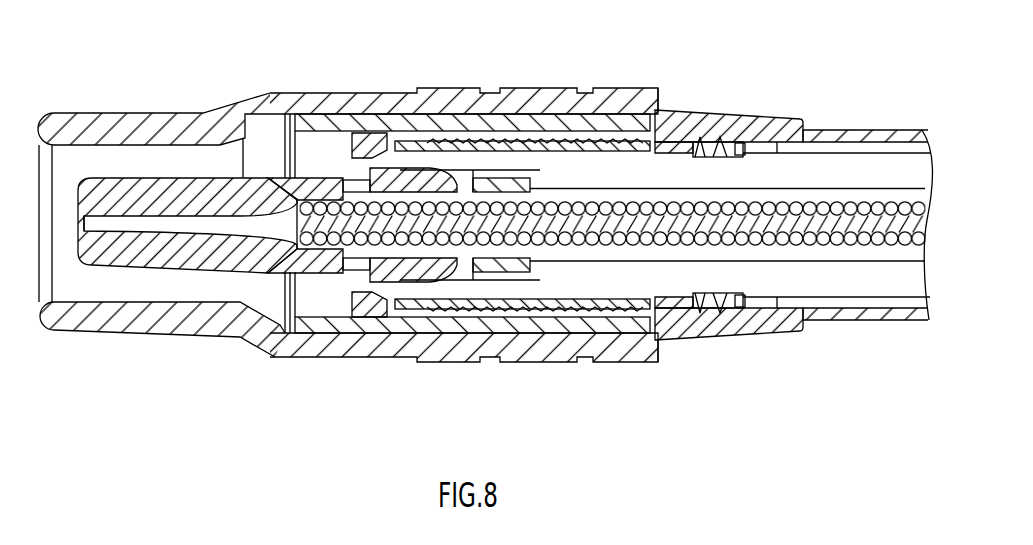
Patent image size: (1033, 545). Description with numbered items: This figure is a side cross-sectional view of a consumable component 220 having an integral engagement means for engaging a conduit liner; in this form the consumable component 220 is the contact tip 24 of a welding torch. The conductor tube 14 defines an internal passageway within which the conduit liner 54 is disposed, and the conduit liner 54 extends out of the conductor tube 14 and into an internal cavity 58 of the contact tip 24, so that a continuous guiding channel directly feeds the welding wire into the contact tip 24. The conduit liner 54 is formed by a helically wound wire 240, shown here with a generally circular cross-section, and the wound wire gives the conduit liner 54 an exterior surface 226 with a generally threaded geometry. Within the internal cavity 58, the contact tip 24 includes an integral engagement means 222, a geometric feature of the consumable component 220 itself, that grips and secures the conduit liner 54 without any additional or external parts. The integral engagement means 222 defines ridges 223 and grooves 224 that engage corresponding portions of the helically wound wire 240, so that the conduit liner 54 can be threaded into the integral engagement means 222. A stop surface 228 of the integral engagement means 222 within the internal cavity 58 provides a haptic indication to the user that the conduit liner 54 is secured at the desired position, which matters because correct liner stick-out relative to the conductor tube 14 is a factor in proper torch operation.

The conductor tube 14 is at (870, 321).
The contact tip 24 is at (168, 270).
The conduit liner 54 is at (727, 224).
The internal cavity 58 is at (274, 232).
The consumable component 220 is at (140, 187).
The integral engagement means 222 is at (297, 264).
The ridges 223 is at (303, 248).
The grooves 224 is at (312, 201).
The exterior surface 226 is at (758, 191).
The stop surface 228 is at (292, 197).
The helically wound wire 240 is at (601, 202).